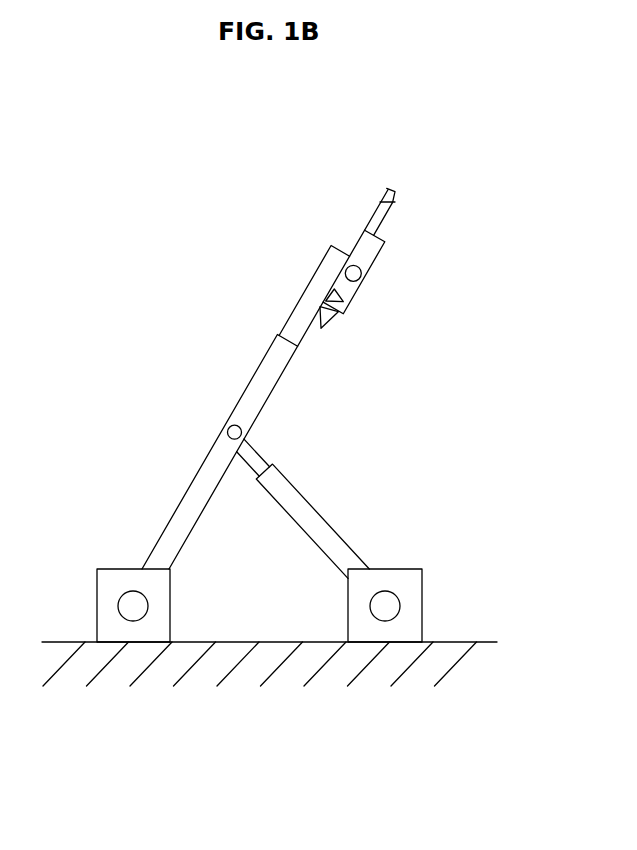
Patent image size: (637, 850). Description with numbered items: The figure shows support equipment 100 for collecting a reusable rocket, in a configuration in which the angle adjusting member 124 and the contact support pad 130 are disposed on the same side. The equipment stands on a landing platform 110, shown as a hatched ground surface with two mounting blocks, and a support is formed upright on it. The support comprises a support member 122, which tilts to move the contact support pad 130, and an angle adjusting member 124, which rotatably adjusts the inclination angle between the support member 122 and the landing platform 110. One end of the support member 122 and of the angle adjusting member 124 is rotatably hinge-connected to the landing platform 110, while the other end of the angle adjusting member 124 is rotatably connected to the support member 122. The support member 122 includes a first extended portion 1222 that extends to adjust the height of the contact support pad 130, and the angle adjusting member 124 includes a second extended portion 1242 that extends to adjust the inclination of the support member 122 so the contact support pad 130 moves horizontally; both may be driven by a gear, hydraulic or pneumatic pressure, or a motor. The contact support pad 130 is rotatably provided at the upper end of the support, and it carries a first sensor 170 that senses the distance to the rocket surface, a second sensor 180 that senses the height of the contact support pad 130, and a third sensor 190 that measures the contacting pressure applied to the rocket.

The support equipment 100 is at (309, 117).
The landing platform 110 is at (389, 730).
The support member 122 is at (214, 387).
The first extended portion 1222 is at (308, 285).
The angle adjusting member 124 is at (338, 503).
The second extended portion 1242 is at (263, 443).
The contact support pad 130 is at (375, 270).
The first sensor 170 is at (395, 200).
The second sensor 180 is at (326, 321).
The third sensor 190 is at (345, 306).